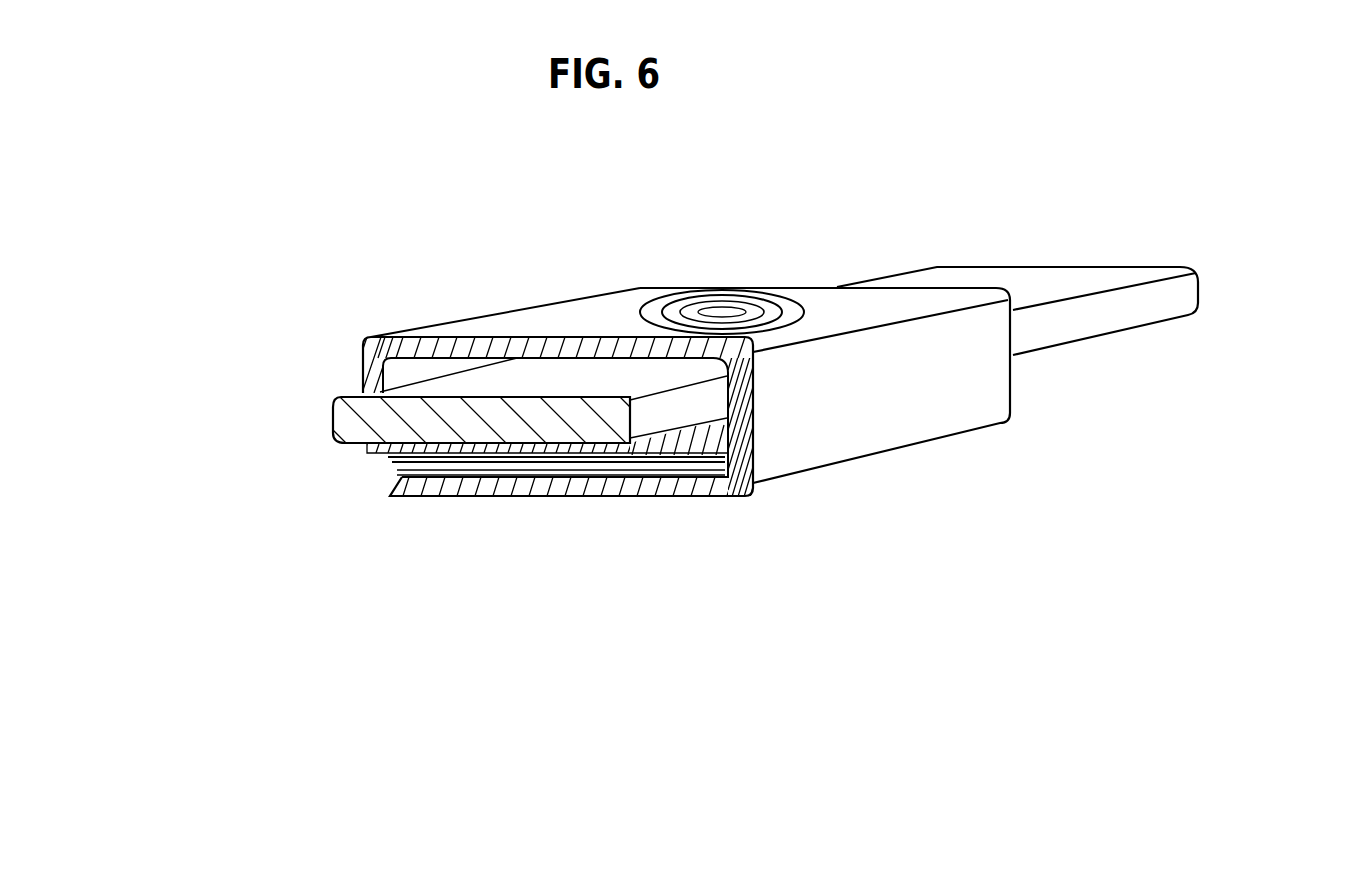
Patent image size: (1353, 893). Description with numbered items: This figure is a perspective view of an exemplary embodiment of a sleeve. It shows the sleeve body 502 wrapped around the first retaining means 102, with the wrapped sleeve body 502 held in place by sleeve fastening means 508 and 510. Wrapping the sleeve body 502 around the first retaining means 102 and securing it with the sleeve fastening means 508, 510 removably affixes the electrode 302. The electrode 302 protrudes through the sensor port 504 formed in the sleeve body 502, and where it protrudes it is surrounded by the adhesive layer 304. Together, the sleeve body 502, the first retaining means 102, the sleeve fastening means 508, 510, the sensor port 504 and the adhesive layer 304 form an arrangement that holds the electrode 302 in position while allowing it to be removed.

The first retaining means 102 is at (1177, 290).
The electrode 302 is at (610, 285).
The adhesive layer 304 is at (787, 316).
The sleeve body 502 is at (933, 415).
The sensor port 504 is at (764, 312).
The sleeve fastening means 508 is at (390, 460).
The sleeve fastening means 510 is at (392, 492).